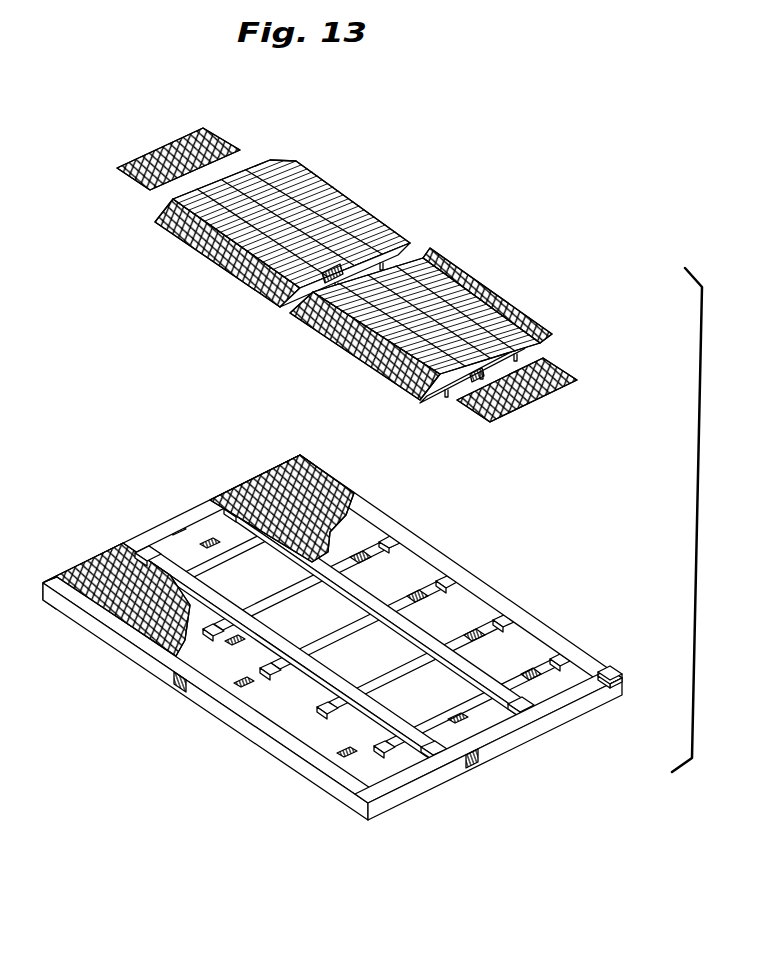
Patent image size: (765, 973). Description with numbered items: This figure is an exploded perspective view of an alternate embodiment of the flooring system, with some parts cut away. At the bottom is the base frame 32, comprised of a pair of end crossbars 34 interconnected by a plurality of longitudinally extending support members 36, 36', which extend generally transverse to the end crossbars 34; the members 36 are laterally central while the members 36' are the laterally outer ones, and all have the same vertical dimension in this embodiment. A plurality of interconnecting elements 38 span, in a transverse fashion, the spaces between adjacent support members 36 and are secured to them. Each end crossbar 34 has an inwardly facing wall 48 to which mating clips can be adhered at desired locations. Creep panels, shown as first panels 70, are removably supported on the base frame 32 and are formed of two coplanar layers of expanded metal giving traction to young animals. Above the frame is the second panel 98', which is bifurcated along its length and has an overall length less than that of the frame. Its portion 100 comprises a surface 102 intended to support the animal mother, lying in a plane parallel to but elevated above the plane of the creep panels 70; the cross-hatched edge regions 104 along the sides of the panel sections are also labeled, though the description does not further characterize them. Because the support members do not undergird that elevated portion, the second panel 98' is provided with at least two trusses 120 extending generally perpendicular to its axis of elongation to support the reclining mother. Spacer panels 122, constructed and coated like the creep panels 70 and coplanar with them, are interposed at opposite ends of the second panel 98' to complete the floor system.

The base frame 32 is at (337, 655).
The end crossbar 34 is at (560, 722).
The longitudinally extending support member 36 is at (335, 631).
The laterally outer support member 36' is at (332, 639).
The interconnecting element 38 is at (220, 548).
The inwardly facing wall 48 is at (604, 688).
The first panel 70 is at (332, 500).
The second panel 98' is at (343, 283).
The portion 100 is at (303, 236).
The surface 102 is at (405, 268).
The beveled edge 104 is at (253, 283).
The truss 120 is at (343, 270).
The spacer panel 122 is at (127, 164).